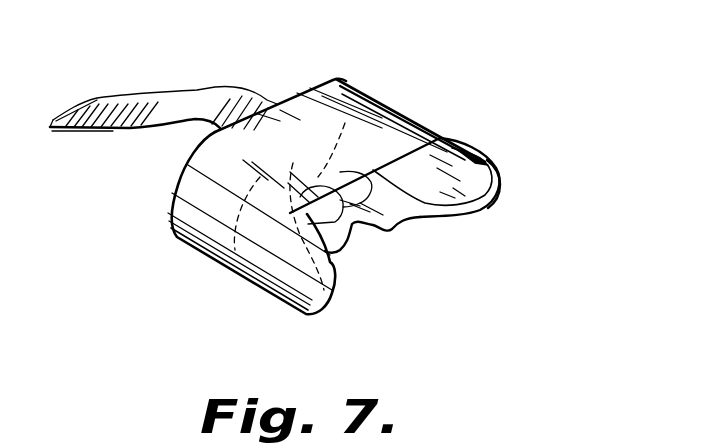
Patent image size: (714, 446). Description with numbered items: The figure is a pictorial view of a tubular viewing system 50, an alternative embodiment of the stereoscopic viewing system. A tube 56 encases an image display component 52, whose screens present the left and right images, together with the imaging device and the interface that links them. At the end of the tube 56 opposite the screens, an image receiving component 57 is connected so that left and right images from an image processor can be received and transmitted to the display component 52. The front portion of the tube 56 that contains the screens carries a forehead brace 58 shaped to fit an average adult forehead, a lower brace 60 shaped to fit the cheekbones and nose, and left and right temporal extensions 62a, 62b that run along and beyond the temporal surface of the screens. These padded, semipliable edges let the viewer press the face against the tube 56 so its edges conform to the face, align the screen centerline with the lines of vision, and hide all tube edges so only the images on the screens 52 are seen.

The tubular viewing system 50 is at (365, 86).
The image display component 52 is at (436, 177).
The tube 56 is at (313, 90).
The image receiving component 57 is at (275, 103).
The forehead brace 58 is at (420, 148).
The lower brace 60 is at (385, 226).
The left temporal extension 62a is at (320, 312).
The right temporal extension 62b is at (497, 193).